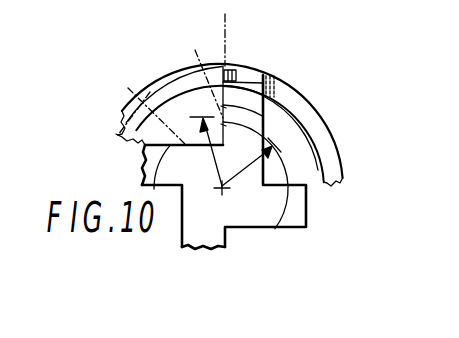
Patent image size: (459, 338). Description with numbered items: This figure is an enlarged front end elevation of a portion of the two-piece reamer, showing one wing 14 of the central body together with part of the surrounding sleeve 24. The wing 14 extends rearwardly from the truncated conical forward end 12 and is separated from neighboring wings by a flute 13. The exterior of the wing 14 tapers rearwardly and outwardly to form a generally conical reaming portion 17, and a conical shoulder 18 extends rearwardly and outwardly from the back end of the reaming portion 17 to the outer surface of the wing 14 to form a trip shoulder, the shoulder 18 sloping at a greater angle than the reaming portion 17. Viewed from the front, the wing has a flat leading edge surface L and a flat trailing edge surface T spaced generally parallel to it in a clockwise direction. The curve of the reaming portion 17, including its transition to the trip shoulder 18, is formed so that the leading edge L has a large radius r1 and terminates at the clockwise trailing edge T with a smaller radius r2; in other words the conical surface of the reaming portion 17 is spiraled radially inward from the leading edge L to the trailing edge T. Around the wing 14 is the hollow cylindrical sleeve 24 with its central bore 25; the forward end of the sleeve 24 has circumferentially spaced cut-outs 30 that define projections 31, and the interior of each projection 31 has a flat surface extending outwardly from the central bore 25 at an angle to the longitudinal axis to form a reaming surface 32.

The truncated conical forward end 12 is at (233, 223).
The flutes 13 is at (297, 174).
The wings 14 is at (196, 75).
The conical reaming portion 17 is at (180, 70).
The conical shoulder 18 is at (262, 106).
The cylindrical sleeve 24 is at (141, 108).
The central bore 25 is at (129, 120).
The cut-outs 30 is at (312, 125).
The projections 31 is at (241, 70).
The reaming surface 32 is at (275, 83).
The leading edge surface L is at (222, 41).
The trailing edge surface T is at (267, 78).
The large radius r1 is at (218, 166).
The smaller radius r2 is at (249, 170).